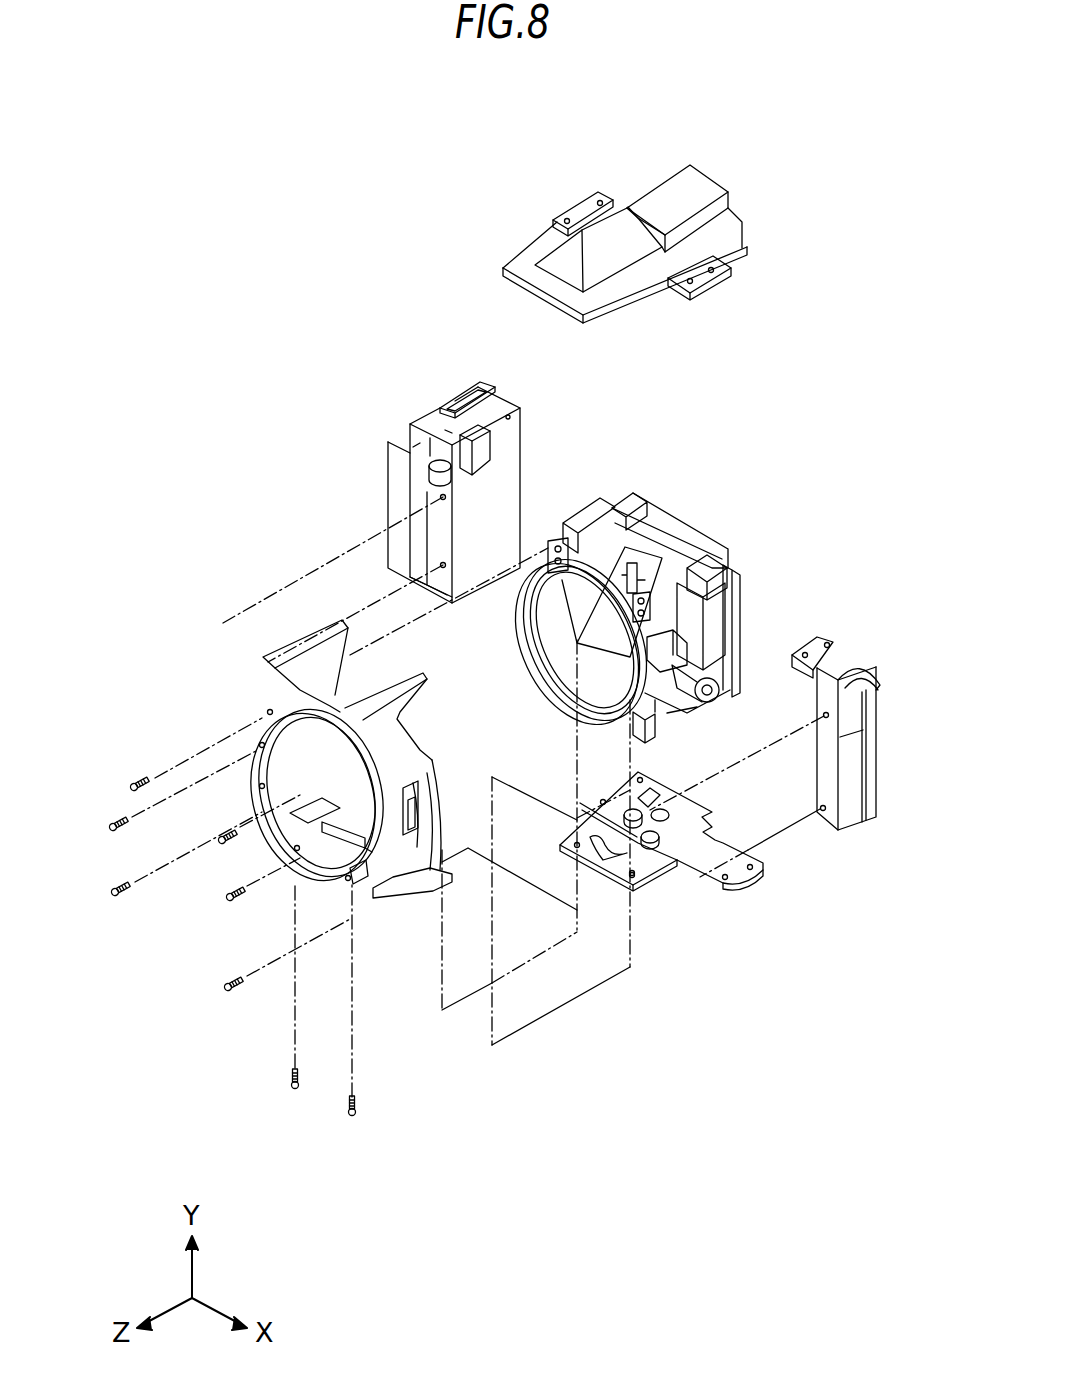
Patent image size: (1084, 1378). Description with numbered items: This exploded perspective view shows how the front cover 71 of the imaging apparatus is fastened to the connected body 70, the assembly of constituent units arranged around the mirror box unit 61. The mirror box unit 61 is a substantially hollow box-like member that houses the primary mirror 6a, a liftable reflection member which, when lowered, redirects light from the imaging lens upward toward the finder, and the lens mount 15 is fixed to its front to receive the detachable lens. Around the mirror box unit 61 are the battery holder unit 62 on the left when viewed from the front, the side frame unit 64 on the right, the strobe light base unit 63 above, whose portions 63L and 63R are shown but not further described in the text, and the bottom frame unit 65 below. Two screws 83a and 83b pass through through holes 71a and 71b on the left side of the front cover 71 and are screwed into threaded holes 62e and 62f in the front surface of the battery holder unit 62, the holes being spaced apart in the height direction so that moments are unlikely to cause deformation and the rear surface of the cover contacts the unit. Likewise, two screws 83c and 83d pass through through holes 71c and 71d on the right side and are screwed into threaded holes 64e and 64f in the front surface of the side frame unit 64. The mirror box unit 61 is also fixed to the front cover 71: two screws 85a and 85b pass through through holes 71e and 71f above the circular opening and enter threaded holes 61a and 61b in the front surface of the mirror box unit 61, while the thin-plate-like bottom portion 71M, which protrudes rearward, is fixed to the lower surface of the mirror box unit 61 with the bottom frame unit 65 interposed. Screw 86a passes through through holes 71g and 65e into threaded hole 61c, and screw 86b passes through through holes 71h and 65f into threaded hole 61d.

The connected body 70 is at (364, 145).
The strobe light base unit 63 is at (713, 173).
The left mounting tab of cover 63L is at (576, 208).
The right mounting tab of cover 63R is at (713, 282).
The battery holder unit 62 is at (420, 415).
The threaded hole 62e is at (441, 498).
The threaded hole 62f is at (441, 566).
The mirror box unit 61 is at (655, 520).
The primary mirror 6a is at (632, 555).
The threaded hole 61a is at (552, 544).
The threaded hole 61b is at (648, 594).
The threaded hole 61c is at (578, 695).
The threaded hole 61d is at (630, 730).
The lens mount 15 is at (528, 642).
The front cover 71 is at (266, 660).
The through hole 71a is at (262, 745).
The through hole 71b is at (258, 789).
The through hole 71c is at (433, 774).
The through hole 71d is at (398, 896).
The through hole 71e is at (268, 710).
The through hole 71f is at (371, 700).
The through hole 71g is at (297, 850).
The through hole 71h is at (347, 880).
The bottom portion 71M is at (358, 882).
The side frame unit 64 is at (878, 748).
The threaded hole 64e is at (823, 715).
The threaded hole 64f is at (820, 808).
The bottom frame unit 65 is at (753, 872).
The through hole 65e is at (575, 848).
The through hole 65f is at (631, 880).
The screw 83a is at (113, 818).
The screw 83b is at (116, 896).
The screw 83c is at (230, 900).
The screw 83d is at (230, 990).
The screw 85a is at (140, 780).
The screw 85b is at (222, 844).
The screw 86a is at (295, 1092).
The screw 86b is at (352, 1120).